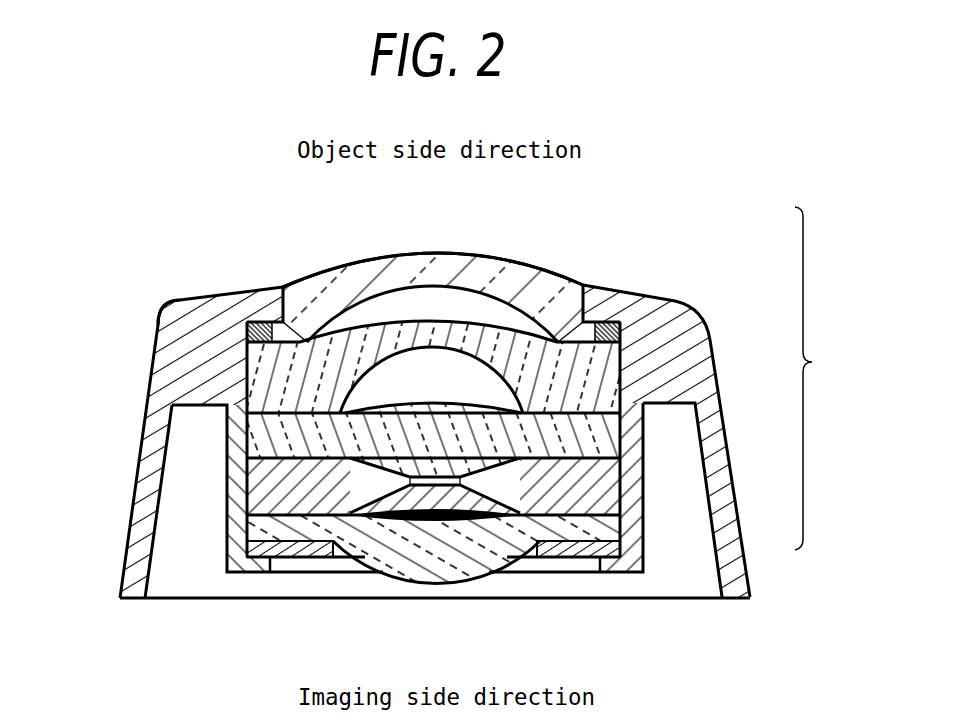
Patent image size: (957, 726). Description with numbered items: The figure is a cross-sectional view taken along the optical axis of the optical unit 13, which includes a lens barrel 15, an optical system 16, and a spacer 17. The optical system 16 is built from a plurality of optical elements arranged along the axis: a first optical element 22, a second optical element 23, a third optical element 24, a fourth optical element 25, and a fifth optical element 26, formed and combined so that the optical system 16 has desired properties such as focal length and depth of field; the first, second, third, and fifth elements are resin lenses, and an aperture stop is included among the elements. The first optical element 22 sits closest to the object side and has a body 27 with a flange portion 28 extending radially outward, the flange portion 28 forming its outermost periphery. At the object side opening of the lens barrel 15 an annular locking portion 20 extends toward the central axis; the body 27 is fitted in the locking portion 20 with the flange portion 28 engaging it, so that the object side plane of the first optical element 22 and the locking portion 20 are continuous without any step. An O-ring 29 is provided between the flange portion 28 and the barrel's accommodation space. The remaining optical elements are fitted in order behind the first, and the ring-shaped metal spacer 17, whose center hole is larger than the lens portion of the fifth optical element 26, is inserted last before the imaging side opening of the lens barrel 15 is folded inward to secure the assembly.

The optical unit 13 is at (263, 660).
The lens barrel 15 is at (147, 461).
The optical system 16 is at (544, 395).
The spacer 17 is at (568, 552).
The locking portion 20 is at (279, 320).
The first optical element 22 is at (556, 271).
The second optical element 23 is at (596, 376).
The third optical element 24 is at (593, 437).
The fourth optical element 25 is at (593, 492).
The fifth optical element 26 is at (599, 524).
The body 27 is at (366, 258).
The flange portion 28 is at (263, 332).
The O-ring 29 is at (156, 338).